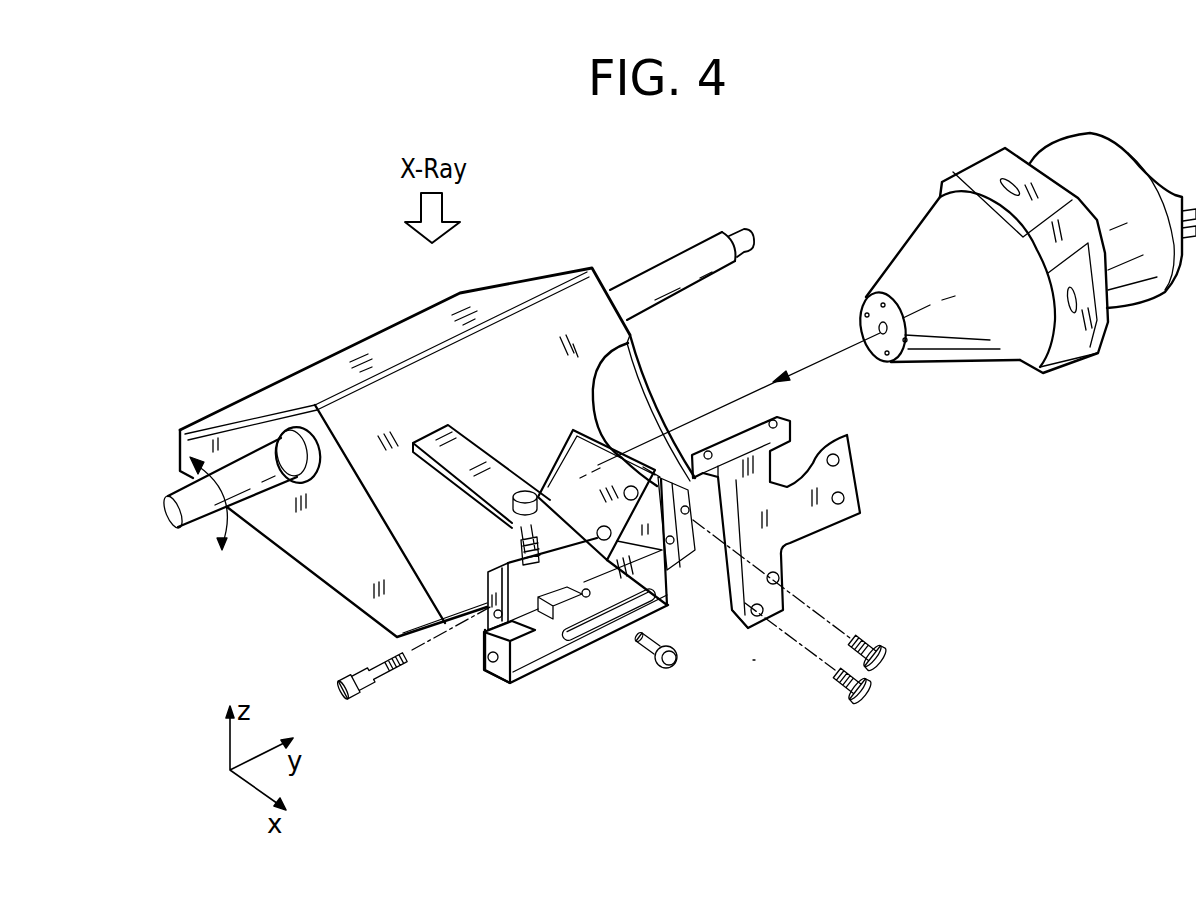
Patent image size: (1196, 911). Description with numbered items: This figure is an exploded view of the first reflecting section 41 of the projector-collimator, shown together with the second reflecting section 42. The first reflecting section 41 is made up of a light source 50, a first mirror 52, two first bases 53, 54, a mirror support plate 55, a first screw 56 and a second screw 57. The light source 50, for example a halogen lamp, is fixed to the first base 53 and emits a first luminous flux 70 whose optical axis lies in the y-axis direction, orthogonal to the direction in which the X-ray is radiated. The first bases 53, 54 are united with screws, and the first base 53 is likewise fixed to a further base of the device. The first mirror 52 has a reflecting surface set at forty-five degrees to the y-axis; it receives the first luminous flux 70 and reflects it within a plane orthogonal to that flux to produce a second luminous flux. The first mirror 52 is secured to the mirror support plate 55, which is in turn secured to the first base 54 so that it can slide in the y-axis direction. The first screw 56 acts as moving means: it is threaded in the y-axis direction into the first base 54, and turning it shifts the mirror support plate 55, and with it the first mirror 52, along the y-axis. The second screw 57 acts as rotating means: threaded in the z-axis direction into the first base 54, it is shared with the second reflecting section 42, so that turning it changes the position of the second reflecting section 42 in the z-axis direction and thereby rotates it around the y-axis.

The second reflecting section 42 is at (537, 320).
The first mirror 52 is at (573, 467).
The light source 50 is at (965, 340).
The first luminous flux 70 is at (845, 352).
The first base 53 is at (749, 560).
The first reflecting section 41 is at (752, 659).
The first base 54 is at (568, 565).
The mirror support plate 55 is at (550, 648).
The first screw 56 is at (355, 703).
The second screw 57 is at (520, 565).